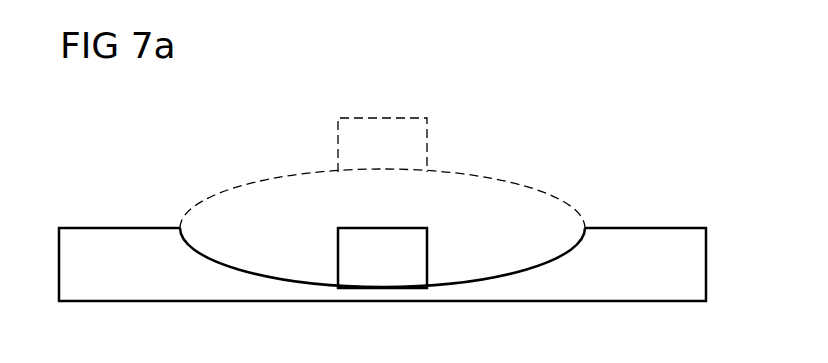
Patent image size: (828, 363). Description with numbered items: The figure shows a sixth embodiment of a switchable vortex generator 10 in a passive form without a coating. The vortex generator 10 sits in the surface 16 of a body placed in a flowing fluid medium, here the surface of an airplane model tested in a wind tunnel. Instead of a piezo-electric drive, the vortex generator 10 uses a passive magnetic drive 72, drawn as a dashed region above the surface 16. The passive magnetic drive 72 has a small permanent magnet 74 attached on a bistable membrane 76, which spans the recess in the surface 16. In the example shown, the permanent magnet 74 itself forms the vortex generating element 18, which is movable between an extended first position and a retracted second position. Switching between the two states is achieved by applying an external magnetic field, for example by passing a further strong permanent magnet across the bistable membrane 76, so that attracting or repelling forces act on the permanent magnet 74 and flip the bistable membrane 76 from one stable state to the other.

The switchable vortex generator 10 is at (253, 90).
The surface 16 is at (665, 220).
The vortex generating element 18 is at (384, 150).
The passive magnetic drive 72 is at (422, 100).
The permanent magnet 74 is at (343, 256).
The bistable membrane 76 is at (458, 288).